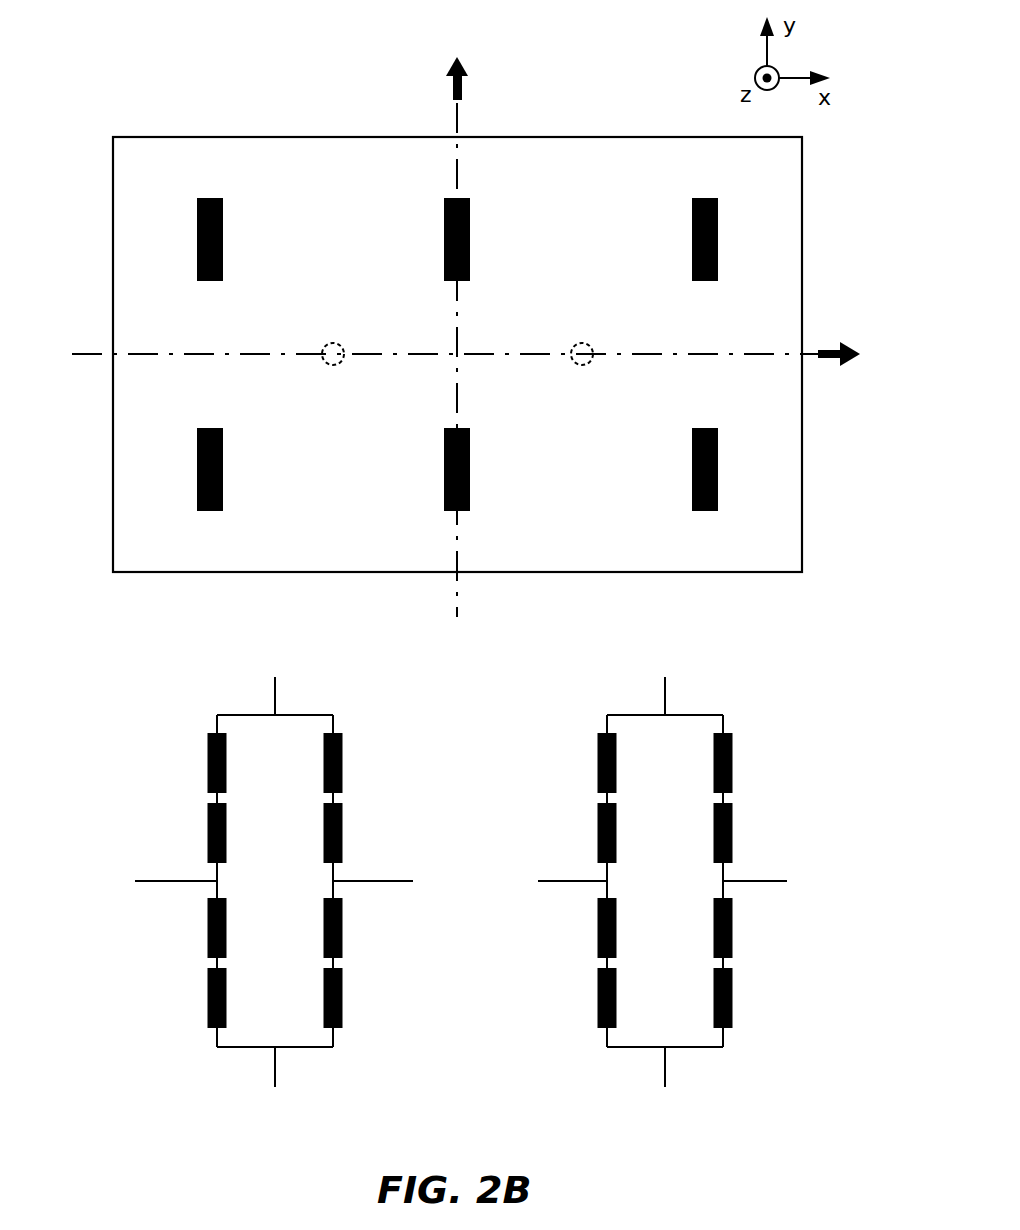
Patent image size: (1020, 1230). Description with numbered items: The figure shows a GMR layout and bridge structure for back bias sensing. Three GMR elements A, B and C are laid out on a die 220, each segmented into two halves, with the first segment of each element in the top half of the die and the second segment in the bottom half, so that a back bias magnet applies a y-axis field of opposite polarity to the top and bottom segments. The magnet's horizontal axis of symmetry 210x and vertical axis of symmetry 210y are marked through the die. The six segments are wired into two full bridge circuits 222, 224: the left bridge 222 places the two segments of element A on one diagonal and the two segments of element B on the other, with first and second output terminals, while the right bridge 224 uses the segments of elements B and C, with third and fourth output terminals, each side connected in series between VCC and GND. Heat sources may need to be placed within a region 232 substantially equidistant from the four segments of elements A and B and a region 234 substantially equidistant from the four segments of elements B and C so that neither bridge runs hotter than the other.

The die 220 is at (170, 169).
The horizontal axis of symmetry 210x is at (474, 339).
The vertical axis of symmetry 210y is at (455, 326).
The region 232 is at (333, 366).
The region 234 is at (582, 366).
The bridge circuit 222 is at (197, 670).
The bridge circuit 224 is at (745, 670).